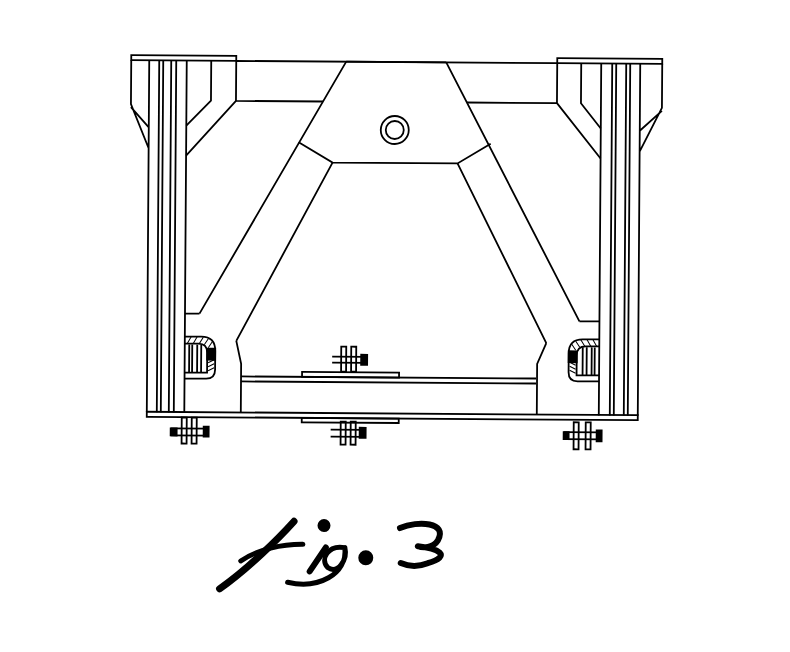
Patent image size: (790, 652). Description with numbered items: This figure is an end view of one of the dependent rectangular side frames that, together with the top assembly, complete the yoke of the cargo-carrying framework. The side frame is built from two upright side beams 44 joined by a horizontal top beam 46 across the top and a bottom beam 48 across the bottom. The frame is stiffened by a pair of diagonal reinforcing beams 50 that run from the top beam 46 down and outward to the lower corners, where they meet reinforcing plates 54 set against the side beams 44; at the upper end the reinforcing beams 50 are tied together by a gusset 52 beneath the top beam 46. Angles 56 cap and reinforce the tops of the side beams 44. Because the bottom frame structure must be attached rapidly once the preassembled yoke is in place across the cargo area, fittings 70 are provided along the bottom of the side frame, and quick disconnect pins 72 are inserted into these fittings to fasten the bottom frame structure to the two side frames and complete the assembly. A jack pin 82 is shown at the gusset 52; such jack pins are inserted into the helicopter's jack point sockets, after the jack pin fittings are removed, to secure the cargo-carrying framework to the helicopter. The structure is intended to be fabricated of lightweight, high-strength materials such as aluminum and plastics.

The side beams 44 is at (145, 210).
The top beams 46 is at (500, 62).
The bottom beams 48 is at (460, 346).
The reinforcing beams 50 is at (295, 229).
The gusset 52 is at (358, 70).
The plates 54 is at (243, 352).
The angles 56 is at (137, 70).
The fittings 70 is at (180, 421).
The quick disconnect pins 72 is at (218, 360).
The jack pins 82 is at (397, 115).